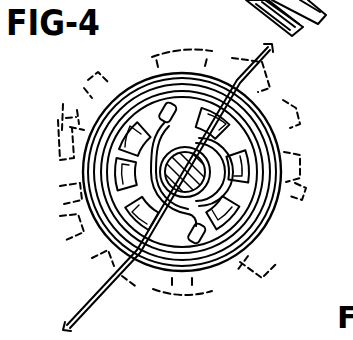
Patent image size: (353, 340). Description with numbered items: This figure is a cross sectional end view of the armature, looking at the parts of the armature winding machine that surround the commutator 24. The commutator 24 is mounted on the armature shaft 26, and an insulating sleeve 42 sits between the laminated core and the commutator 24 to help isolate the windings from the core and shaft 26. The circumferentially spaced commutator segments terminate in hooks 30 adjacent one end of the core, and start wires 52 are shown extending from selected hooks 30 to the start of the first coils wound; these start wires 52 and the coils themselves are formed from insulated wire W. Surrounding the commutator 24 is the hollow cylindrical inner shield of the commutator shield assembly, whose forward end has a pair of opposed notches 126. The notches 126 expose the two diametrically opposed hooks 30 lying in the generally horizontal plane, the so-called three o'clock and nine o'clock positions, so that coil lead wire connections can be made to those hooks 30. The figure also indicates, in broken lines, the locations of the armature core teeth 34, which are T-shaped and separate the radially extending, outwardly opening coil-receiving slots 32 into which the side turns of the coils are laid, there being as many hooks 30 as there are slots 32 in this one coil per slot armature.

The commutator 24 is at (234, 162).
The armature shaft 26 is at (140, 176).
The hooks 30 is at (150, 157).
The coil-receiving slots 32 is at (146, 64).
The T-shaped teeth 34 is at (62, 118).
The insulating sleeve 42 is at (88, 222).
The start wires 52 is at (158, 106).
The notches 126 is at (133, 112).
The wire W is at (78, 305).